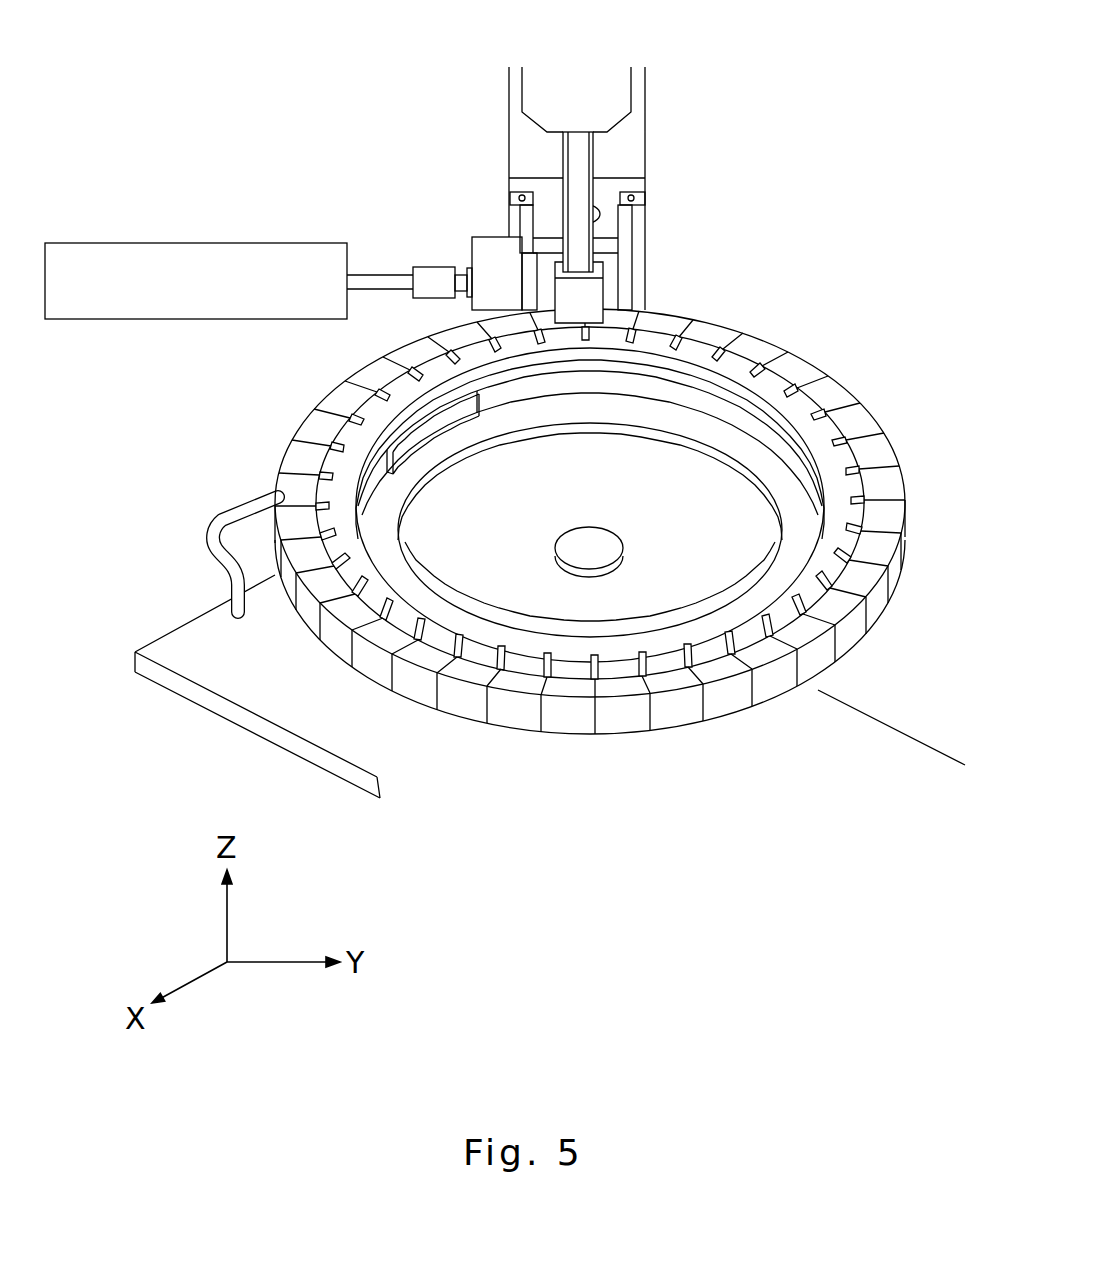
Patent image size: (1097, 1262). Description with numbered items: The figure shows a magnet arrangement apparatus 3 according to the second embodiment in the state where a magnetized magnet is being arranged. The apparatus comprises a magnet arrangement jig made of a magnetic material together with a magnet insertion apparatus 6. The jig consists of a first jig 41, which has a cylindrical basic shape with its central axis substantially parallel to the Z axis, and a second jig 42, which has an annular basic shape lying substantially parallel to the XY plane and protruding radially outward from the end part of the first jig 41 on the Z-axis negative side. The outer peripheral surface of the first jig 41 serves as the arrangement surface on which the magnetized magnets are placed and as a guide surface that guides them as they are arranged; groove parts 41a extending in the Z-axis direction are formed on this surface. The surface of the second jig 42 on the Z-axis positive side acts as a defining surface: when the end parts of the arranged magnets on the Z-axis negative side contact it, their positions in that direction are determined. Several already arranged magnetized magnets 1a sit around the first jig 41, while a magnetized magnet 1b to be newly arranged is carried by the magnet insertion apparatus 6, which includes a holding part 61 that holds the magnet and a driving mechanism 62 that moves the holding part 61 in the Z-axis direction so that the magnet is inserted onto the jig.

The magnet arrangement apparatus 3 is at (870, 47).
The magnet insertion apparatus 6 is at (571, 188).
The driving mechanism 62 is at (533, 140).
The holding part 61 is at (577, 214).
The magnetized magnet to be newly arranged 1b is at (585, 296).
The already arranged magnetized magnet 1a is at (730, 336).
The first jig 41 is at (610, 503).
The groove part 41a is at (757, 372).
The second jig 42 is at (472, 440).